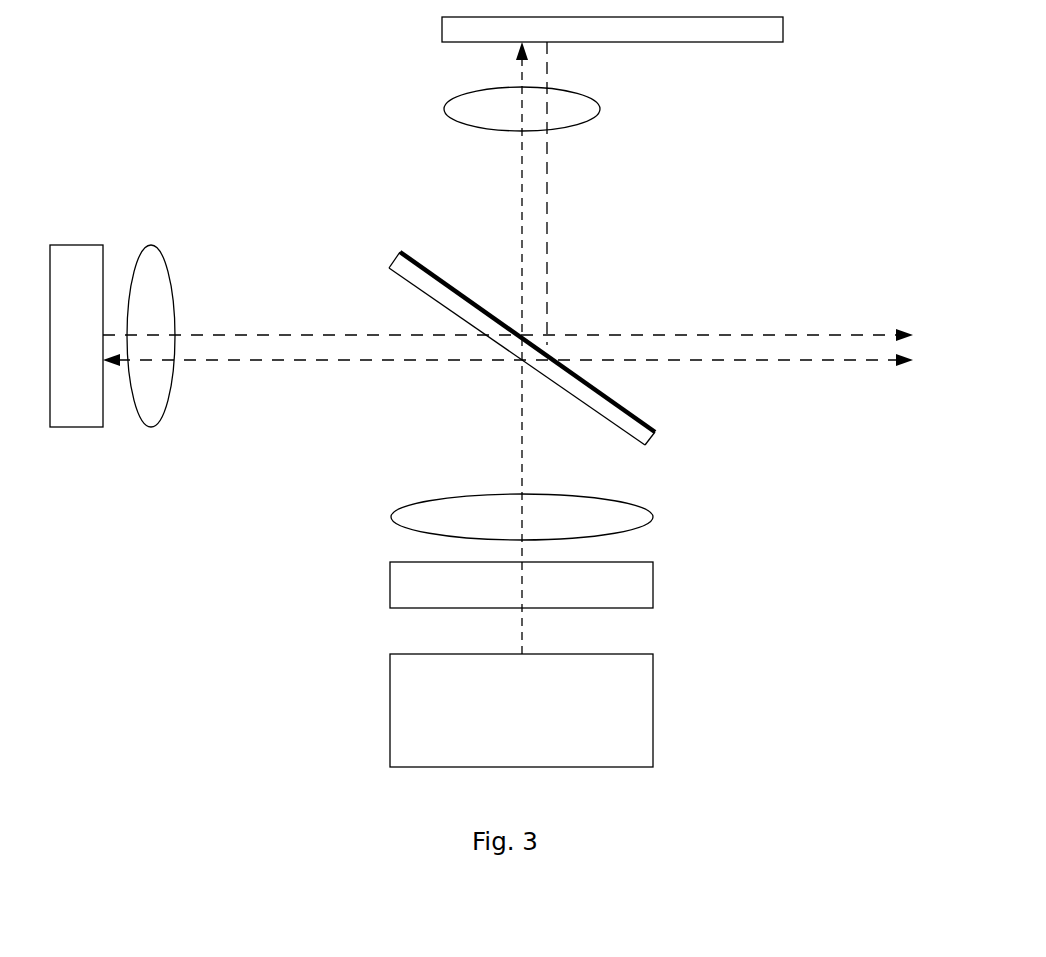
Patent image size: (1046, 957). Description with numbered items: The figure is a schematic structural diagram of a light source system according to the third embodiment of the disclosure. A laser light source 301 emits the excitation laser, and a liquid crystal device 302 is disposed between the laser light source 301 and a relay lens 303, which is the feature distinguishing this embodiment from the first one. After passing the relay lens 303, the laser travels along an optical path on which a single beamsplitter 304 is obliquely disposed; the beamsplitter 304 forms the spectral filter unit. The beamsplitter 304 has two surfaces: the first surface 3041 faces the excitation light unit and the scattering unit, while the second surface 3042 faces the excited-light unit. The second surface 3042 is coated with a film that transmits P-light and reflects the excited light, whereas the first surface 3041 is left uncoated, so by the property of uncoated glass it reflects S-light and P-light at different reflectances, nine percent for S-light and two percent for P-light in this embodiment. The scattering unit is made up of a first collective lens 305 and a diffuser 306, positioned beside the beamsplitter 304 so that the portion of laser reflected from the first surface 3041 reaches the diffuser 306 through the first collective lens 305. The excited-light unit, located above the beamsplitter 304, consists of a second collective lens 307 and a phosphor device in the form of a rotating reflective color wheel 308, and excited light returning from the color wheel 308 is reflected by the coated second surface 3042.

The laser light source 301 is at (655, 697).
The liquid crystal device 302 is at (653, 608).
The relay lens 303 is at (625, 540).
The beamsplitter 304 is at (575, 303).
The first surface 3041 is at (598, 428).
The second surface 3042 is at (625, 403).
The first collective lens 305 is at (150, 427).
The diffuser 306 is at (75, 427).
The second collective lens 307 is at (600, 110).
The reflective color wheel 308 is at (735, 42).